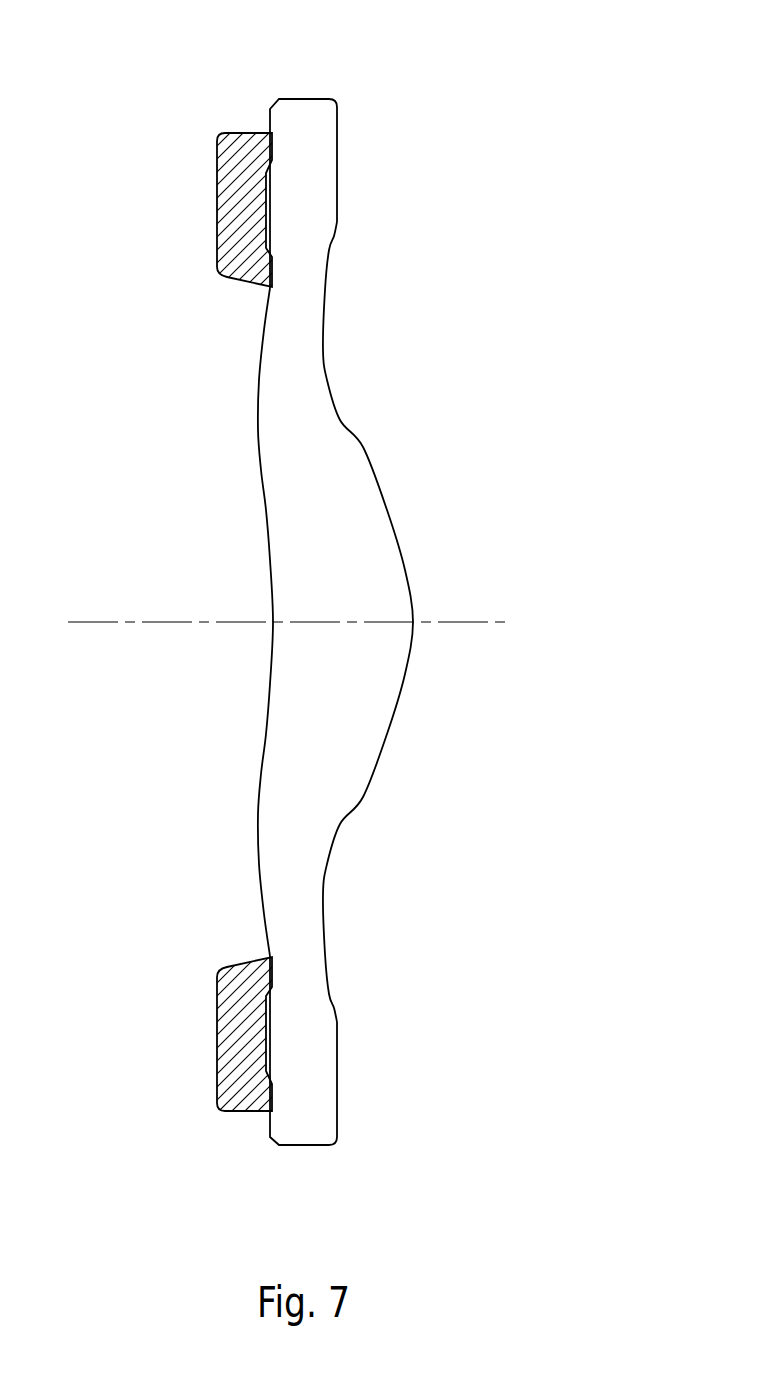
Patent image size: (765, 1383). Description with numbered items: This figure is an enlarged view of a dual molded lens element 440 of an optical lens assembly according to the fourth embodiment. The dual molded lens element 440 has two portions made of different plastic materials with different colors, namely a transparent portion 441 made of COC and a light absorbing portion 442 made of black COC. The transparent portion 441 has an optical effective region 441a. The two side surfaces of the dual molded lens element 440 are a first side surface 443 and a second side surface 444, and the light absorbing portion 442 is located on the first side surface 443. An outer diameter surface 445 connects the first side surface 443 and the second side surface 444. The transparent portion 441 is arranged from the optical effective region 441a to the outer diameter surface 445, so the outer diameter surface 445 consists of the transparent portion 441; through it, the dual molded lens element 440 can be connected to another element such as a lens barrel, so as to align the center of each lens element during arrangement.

The dual molded lens element 440 is at (67, 105).
The transparent portion 441 is at (296, 113).
The optical effective region 441a is at (357, 648).
The light absorbing portion 442 is at (240, 1040).
The first side surface 443 is at (249, 501).
The second side surface 444 is at (401, 489).
The outer diameter surface 445 is at (307, 1147).